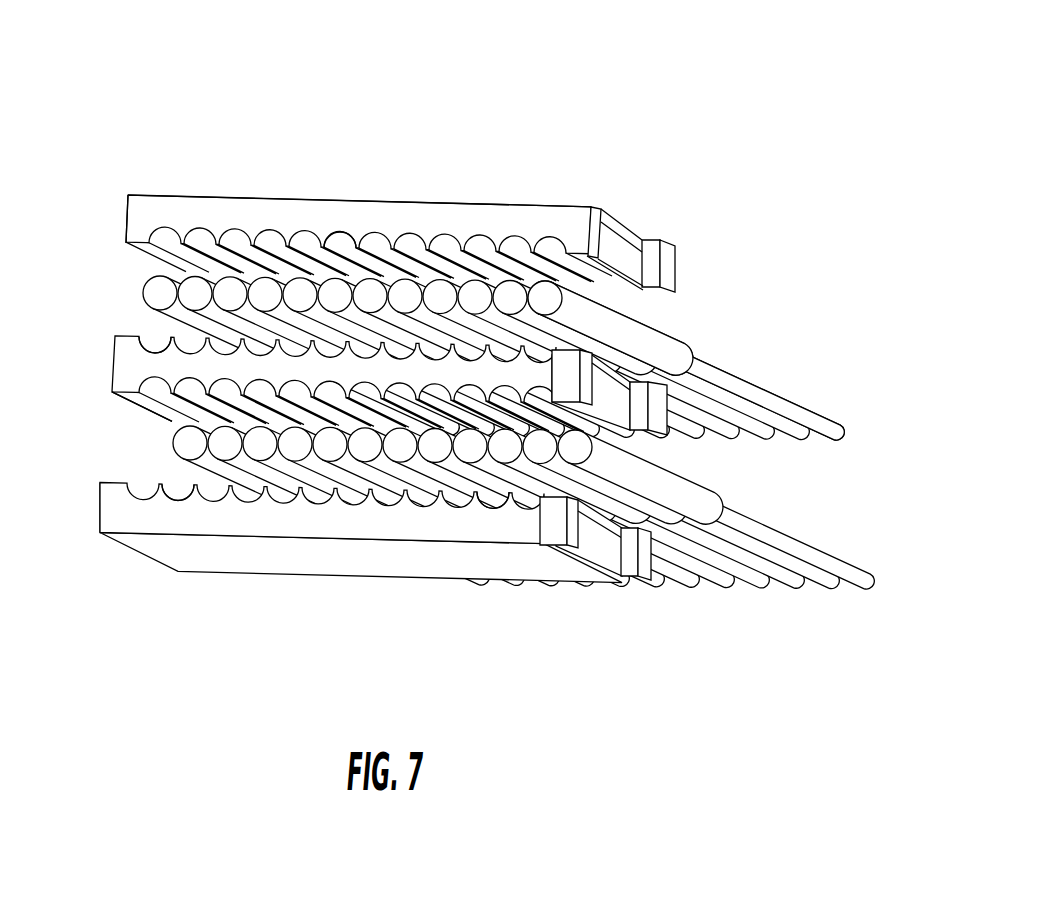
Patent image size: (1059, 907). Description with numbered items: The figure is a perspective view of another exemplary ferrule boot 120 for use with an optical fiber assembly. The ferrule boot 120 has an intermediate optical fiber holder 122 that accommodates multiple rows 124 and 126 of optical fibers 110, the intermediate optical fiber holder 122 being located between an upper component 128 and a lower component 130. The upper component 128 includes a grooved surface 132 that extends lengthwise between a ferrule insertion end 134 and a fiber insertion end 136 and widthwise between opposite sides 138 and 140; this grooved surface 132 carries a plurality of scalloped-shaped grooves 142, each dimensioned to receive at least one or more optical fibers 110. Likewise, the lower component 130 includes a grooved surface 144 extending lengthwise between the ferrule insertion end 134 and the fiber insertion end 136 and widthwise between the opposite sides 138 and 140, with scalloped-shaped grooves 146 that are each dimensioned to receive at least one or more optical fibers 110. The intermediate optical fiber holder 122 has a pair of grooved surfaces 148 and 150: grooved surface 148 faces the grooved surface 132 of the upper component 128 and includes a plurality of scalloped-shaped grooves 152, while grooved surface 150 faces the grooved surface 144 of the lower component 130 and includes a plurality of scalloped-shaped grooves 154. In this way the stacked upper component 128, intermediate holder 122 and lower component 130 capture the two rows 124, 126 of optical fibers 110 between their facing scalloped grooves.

The optical fibers 110 is at (672, 356).
The ferrule boot 120 is at (468, 343).
The intermediate optical fiber holder 122 is at (360, 374).
The row of optical fibers 124 is at (737, 365).
The row of optical fibers 126 is at (541, 507).
The upper component 128 is at (328, 381).
The lower component 130 is at (361, 565).
The grooved surface 132 is at (586, 264).
The ferrule insertion end 134 is at (684, 258).
The fiber insertion end 136 is at (243, 208).
The side 138 is at (127, 217).
The side 140 is at (601, 210).
The scalloped-shaped grooves 142 is at (341, 240).
The grooved surface 144 is at (487, 507).
The scalloped-shaped grooves 146 is at (175, 497).
The grooved surface 148 is at (153, 340).
The grooved surface 150 is at (148, 393).
The scalloped-shaped grooves 152 is at (532, 367).
The scalloped-shaped grooves 154 is at (608, 462).